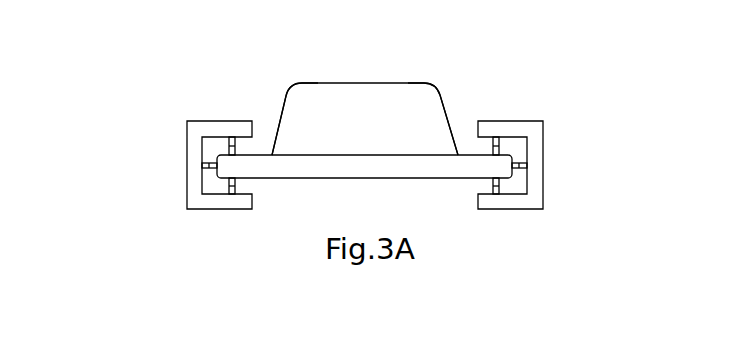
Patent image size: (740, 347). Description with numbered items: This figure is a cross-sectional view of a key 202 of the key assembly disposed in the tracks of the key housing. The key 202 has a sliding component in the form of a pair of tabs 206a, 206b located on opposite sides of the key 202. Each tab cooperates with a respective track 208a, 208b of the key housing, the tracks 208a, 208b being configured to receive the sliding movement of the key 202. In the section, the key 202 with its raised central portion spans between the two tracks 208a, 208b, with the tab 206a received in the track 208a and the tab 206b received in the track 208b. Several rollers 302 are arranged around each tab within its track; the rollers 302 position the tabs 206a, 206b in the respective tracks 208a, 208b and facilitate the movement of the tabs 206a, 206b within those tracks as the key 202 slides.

The key 202 is at (350, 66).
The tab 206a is at (468, 153).
The tab 206b is at (266, 154).
The track 208a is at (543, 172).
The track 208b is at (187, 152).
The roller 302 is at (228, 146).